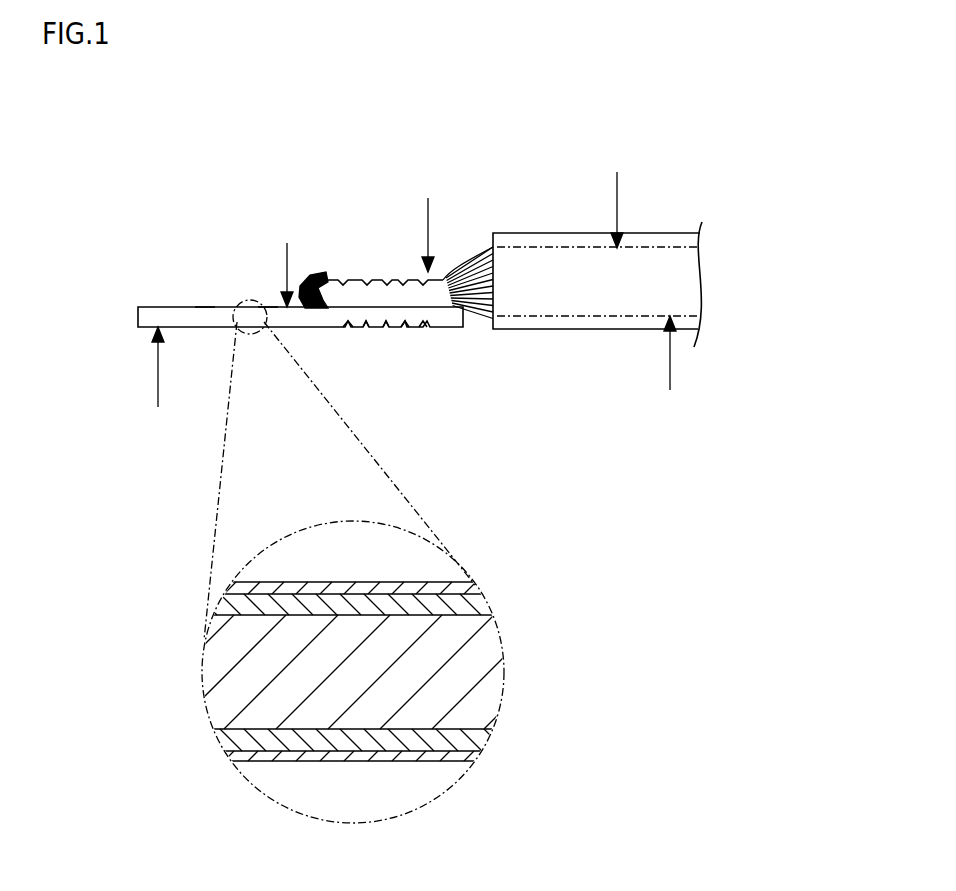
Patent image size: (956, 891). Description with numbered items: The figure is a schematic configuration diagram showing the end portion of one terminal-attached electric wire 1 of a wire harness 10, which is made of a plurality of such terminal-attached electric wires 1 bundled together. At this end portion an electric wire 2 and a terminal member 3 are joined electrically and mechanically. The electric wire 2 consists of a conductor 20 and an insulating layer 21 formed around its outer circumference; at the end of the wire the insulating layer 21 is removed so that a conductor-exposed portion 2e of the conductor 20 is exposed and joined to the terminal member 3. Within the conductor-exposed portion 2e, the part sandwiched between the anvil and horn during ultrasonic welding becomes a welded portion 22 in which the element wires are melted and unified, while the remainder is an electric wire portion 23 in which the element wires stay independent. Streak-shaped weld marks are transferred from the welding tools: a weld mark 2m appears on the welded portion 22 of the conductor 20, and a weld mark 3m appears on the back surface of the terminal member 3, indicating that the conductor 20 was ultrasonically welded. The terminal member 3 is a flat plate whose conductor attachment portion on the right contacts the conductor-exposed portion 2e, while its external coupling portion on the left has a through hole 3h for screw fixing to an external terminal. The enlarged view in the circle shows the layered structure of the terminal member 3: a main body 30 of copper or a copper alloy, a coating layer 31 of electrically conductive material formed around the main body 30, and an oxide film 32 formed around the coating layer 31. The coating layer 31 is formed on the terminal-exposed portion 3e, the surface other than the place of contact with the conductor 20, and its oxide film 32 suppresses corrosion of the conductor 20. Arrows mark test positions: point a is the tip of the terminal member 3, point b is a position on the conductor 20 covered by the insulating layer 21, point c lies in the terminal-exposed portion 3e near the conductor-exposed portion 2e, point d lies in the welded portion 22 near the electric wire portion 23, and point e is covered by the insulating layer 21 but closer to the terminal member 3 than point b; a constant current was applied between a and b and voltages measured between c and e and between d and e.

The terminal-attached electric wire 1 is at (268, 187).
The wire harness 10 is at (420, 370).
The electric wire 2 is at (592, 146).
The conductor 20 is at (523, 250).
The insulating layer 21 is at (585, 235).
The welded portion 22 is at (362, 292).
The electric wire portion 23 is at (462, 258).
The conductor-exposed portion 2e is at (390, 270).
The weld mark 2m is at (363, 280).
The terminal member 3 is at (160, 305).
The through hole 3h is at (205, 322).
The terminal-exposed portion 3e is at (267, 305).
The weld mark 3m is at (405, 328).
The main body 30 is at (488, 680).
The coating layer 31 is at (482, 603).
The oxide film 32 is at (248, 582).
The point a is at (157, 379).
The point b is at (670, 365).
The point c is at (287, 261).
The point d is at (428, 223).
The point e is at (617, 198).